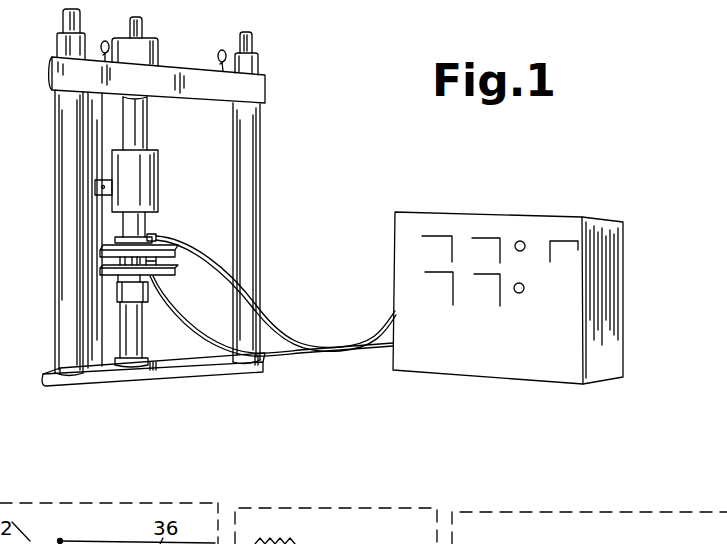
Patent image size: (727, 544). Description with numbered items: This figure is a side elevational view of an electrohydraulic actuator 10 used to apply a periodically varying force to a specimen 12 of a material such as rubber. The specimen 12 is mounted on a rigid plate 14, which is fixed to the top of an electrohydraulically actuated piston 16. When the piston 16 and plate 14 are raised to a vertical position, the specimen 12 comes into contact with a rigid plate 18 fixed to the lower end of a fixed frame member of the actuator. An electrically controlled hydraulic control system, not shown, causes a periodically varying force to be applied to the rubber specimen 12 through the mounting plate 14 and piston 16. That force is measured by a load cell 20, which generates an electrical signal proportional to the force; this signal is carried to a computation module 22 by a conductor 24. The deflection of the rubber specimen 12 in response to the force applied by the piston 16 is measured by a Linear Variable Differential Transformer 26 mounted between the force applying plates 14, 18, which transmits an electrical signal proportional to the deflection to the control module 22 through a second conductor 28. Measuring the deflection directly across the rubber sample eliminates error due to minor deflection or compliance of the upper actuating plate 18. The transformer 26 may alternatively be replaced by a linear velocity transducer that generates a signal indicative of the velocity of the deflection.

The electrohydraulic actuator 10 is at (266, 130).
The specimen 12 is at (127, 260).
The rigid plate 14 is at (174, 274).
The electrohydraulically actuated piston 16 is at (138, 333).
The rigid plate 18 is at (177, 253).
The load cell 20 is at (158, 236).
The computation module 22 is at (563, 224).
The conductor 24 is at (285, 328).
The Linear Variable Differential Transformer (LVDT) 26 is at (178, 263).
The second conductor 28 is at (294, 357).